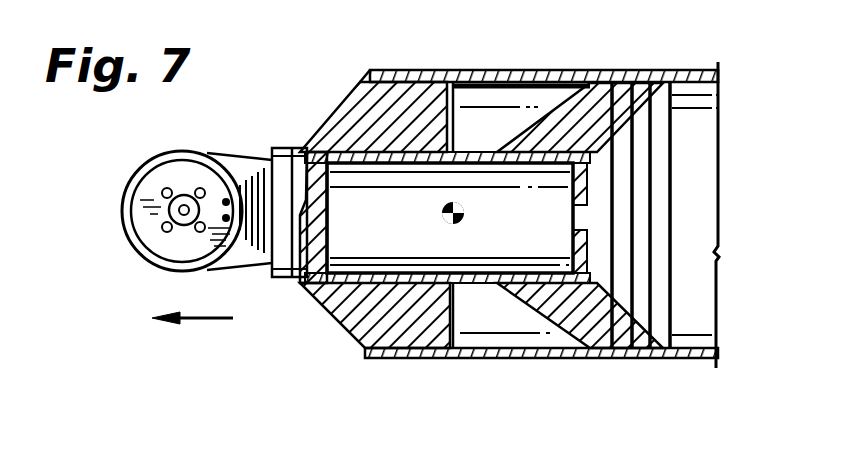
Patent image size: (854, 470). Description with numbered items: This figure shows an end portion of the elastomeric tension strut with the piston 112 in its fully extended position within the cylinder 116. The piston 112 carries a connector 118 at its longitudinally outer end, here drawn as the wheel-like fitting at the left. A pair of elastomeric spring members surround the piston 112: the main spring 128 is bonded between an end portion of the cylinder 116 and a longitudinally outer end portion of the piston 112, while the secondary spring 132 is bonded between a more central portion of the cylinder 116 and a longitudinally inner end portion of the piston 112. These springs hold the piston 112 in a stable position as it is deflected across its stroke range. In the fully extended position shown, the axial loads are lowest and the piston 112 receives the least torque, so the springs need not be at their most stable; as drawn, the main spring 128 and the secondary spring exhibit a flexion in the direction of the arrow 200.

The piston 112 is at (590, 245).
The cylinder 116 is at (505, 70).
The connector 118 is at (244, 158).
The main spring 128 is at (345, 118).
The secondary spring 132 is at (621, 358).
The arrow 200 is at (207, 320).